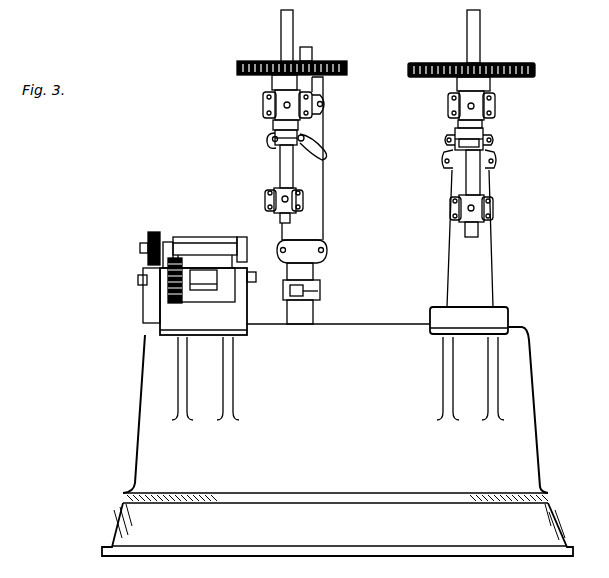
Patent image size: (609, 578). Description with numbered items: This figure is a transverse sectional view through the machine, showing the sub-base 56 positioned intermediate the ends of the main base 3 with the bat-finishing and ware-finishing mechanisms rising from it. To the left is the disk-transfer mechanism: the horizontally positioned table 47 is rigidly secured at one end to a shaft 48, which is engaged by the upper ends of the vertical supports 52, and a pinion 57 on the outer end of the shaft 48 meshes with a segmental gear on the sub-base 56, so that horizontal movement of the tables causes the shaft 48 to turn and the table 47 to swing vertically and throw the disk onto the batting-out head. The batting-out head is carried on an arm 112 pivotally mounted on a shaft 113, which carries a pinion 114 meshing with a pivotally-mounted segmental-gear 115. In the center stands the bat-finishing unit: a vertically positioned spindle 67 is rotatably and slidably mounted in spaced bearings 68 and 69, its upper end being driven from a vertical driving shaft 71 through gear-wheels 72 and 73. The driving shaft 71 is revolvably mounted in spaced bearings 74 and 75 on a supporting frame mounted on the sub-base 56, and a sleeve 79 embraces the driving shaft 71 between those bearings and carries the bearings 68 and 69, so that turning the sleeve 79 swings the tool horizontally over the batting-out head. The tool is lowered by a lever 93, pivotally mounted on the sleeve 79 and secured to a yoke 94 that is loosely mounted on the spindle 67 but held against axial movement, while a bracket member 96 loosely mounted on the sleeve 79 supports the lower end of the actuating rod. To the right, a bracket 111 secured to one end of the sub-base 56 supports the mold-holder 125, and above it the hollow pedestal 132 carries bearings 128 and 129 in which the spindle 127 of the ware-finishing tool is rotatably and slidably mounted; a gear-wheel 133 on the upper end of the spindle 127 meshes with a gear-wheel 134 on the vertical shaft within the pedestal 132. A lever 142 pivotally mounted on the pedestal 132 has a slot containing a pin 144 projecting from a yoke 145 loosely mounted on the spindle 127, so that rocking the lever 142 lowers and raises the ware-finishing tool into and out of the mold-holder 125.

The main base 3 is at (122, 500).
The table 47 is at (200, 237).
The shaft 48 is at (141, 246).
The vertical supports 52 is at (170, 242).
The sub-base 56 is at (392, 317).
The pinion 57 is at (152, 232).
The spindle 67 is at (281, 28).
The bearing 68 is at (262, 100).
The bearing 69 is at (303, 205).
The driving shaft 71 is at (313, 52).
The gear-wheel 72 is at (347, 63).
The gear-wheel 73 is at (237, 68).
The bearing 74 is at (325, 100).
The bearing 75 is at (324, 250).
The sleeve 79 is at (315, 228).
The lever 93 is at (268, 137).
The yoke 94 is at (276, 147).
The bracket member 96 is at (320, 292).
The bracket 111 is at (224, 360).
The arm 112 is at (210, 284).
The shaft 113 is at (138, 280).
The pinion 114 is at (168, 280).
The segmental-gear 115 is at (172, 300).
The mold-holder 125 is at (510, 313).
The spindle 127 is at (480, 25).
The bearing 128 is at (474, 106).
The bearing 129 is at (462, 222).
The pedestal 132 is at (482, 263).
The gear-wheel 133 is at (512, 62).
The gear-wheel 134 is at (536, 70).
The lever 142 is at (446, 155).
The pin 144 is at (485, 146).
The yoke 145 is at (487, 140).